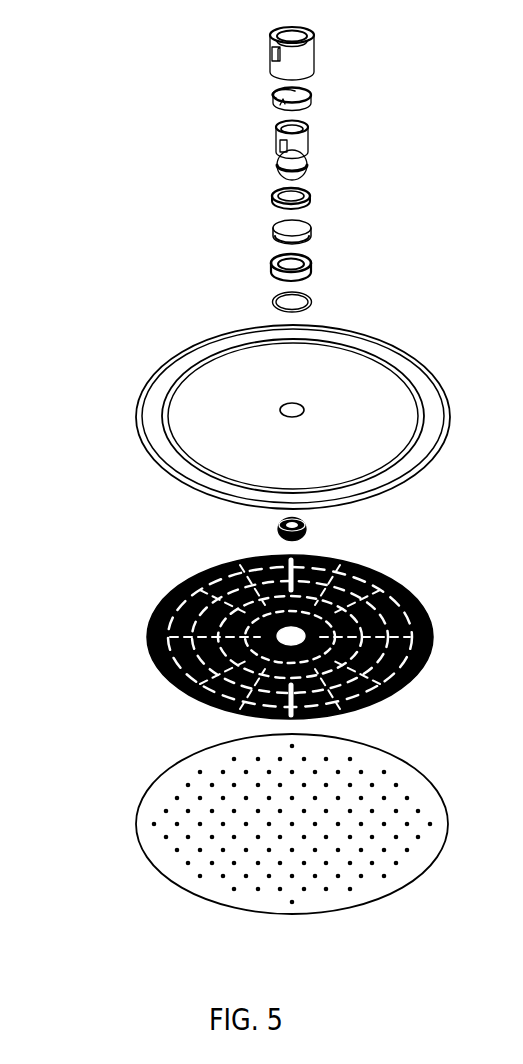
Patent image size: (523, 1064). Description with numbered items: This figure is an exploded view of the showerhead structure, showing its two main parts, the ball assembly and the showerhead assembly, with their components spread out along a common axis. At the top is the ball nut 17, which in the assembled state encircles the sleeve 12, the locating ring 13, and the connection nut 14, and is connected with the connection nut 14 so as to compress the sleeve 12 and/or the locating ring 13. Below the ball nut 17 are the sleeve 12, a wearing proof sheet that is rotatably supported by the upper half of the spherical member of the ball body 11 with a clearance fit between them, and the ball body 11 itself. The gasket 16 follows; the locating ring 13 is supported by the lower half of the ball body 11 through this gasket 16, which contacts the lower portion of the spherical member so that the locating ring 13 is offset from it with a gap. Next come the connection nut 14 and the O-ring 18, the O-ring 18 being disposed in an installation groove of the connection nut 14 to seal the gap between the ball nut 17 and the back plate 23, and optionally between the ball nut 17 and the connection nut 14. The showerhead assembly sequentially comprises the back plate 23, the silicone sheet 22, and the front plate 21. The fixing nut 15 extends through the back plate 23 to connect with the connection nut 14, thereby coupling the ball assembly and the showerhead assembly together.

The ball body 11 is at (276, 141).
The sleeve 12 is at (273, 100).
The locating ring 13 is at (273, 234).
The connection nut 14 is at (271, 271).
The fixing nut 15 is at (278, 530).
The gasket 16 is at (272, 199).
The ball nut 17 is at (271, 69).
The O-ring 18 is at (273, 300).
The front plate 21 is at (147, 820).
The sheet 22 is at (150, 630).
The back plate 23 is at (142, 411).